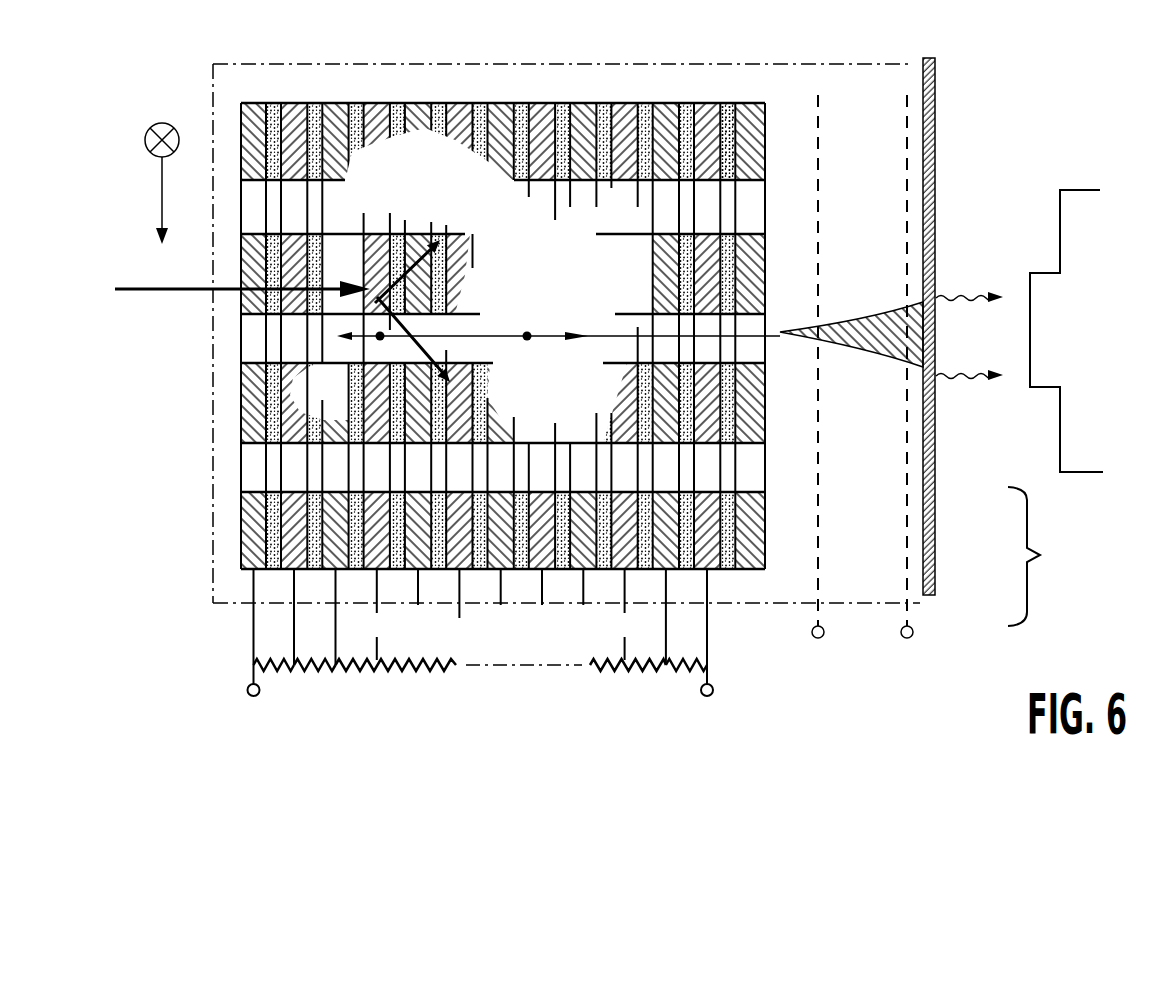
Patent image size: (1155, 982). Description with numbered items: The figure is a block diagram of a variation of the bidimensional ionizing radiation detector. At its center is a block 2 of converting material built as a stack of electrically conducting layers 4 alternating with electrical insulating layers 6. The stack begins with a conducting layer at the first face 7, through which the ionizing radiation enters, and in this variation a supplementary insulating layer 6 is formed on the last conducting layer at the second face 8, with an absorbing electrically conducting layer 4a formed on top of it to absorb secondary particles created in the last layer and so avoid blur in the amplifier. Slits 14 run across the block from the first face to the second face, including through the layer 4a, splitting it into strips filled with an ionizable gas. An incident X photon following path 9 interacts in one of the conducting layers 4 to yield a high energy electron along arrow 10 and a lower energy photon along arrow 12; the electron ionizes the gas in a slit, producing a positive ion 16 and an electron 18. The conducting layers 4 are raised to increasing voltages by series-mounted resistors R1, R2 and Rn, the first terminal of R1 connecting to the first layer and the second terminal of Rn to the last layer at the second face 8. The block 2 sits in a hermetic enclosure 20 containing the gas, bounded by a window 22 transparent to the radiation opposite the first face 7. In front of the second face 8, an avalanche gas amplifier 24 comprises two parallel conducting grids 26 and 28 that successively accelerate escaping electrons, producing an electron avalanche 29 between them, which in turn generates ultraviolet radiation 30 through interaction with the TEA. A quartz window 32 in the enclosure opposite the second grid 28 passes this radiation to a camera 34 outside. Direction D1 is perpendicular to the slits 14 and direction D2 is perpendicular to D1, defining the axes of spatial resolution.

The block 2 is at (462, 94).
The layers of conducting material 4 is at (254, 125).
The electrically conducting layer 4a is at (770, 104).
The electrical insulating layers 6 is at (316, 103).
The first face 7 is at (230, 132).
The second face 8 is at (735, 150).
The path of incident X photon 9 is at (166, 300).
The path of electron 10 is at (470, 333).
The path of scattered photon 12 is at (385, 236).
The slits 14 is at (255, 476).
The positive ion 16 is at (378, 342).
The electron 18 is at (527, 342).
The hermetic enclosure 20 is at (868, 614).
The window 22 is at (213, 413).
The avalanche gas amplifier 24 is at (1046, 556).
The first conducting grid 26 is at (822, 472).
The second conducting grid 28 is at (935, 548).
The electron avalanche 29 is at (870, 322).
The ultraviolet radiation 30 is at (966, 296).
The window 32 is at (934, 103).
The camera 34 is at (1082, 200).
The first resistor R1 is at (290, 673).
The second resistor R2 is at (327, 673).
The last resistor Rn is at (683, 668).
The direction D1 is at (160, 210).
The direction D2 is at (145, 134).